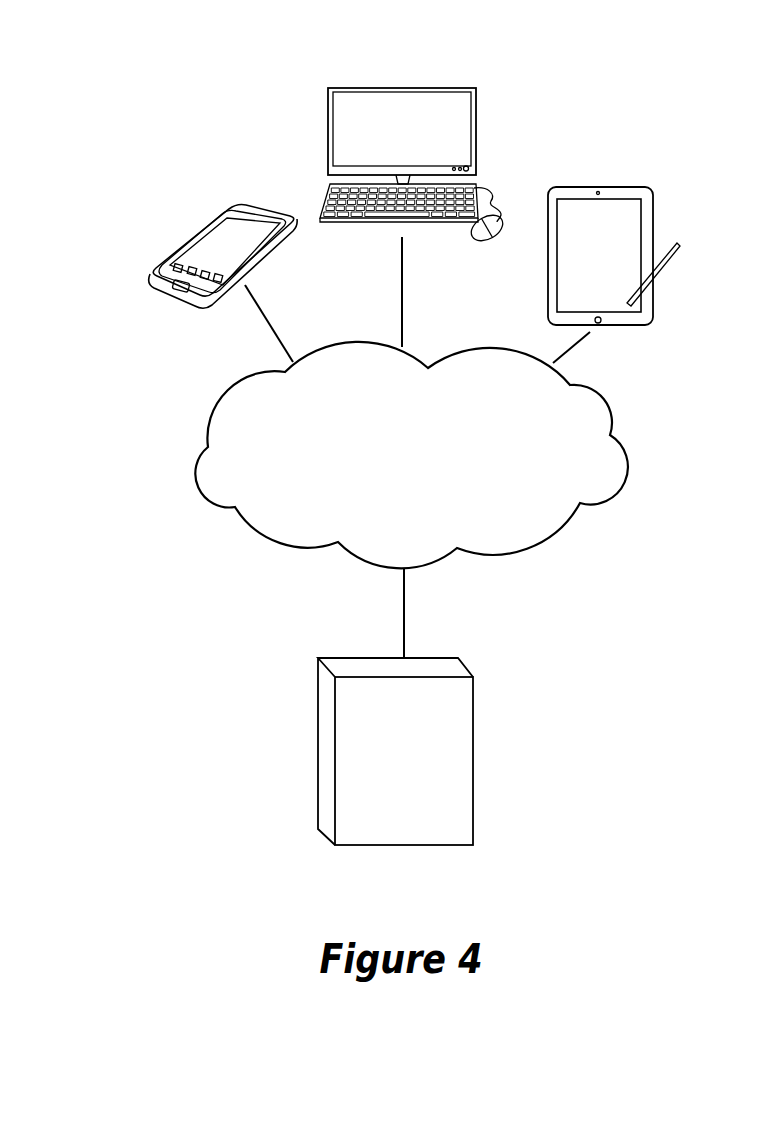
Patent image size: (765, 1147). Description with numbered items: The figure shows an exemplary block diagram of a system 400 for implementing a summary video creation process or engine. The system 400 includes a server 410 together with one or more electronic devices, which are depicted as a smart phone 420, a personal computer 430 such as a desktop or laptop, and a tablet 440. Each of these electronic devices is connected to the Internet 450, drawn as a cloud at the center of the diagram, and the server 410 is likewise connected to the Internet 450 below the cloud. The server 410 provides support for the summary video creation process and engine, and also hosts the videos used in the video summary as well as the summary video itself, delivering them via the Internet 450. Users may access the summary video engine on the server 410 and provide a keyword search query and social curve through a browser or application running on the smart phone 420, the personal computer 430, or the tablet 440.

The system 400 is at (136, 78).
The server 410 is at (308, 713).
The smart phone 420 is at (192, 220).
The personal computer 430 is at (383, 83).
The tablet 440 is at (600, 183).
The Internet 450 is at (192, 470).